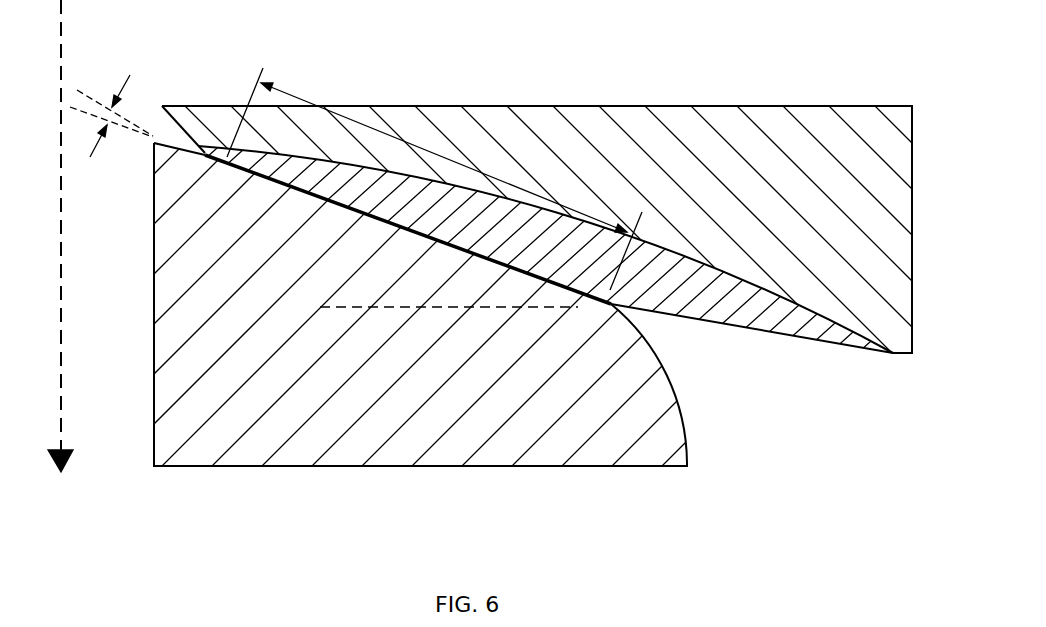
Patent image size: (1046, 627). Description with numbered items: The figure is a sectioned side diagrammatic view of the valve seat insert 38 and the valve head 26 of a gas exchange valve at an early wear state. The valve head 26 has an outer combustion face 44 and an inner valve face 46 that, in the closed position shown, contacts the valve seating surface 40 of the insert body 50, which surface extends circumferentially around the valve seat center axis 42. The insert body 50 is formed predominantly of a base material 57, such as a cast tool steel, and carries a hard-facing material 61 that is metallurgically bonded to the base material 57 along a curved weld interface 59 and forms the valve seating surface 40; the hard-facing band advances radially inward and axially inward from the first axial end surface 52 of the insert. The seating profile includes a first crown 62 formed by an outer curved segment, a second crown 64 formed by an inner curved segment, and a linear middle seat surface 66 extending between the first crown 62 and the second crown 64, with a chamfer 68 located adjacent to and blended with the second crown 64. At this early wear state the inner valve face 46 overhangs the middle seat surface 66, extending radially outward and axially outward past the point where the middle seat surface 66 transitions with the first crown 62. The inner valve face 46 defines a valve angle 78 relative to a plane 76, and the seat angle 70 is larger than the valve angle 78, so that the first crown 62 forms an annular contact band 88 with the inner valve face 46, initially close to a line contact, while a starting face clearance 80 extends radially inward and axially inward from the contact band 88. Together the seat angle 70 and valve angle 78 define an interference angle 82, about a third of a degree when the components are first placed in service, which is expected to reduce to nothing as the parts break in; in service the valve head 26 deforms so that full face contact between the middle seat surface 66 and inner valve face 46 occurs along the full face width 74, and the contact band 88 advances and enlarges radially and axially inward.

The valve head 26 is at (521, 463).
The valve seat insert 38 is at (604, 202).
The insert body 50 is at (790, 105).
The valve seating surface 40 is at (264, 187).
The valve seat center axis 42 is at (68, 224).
The combustion face 44 is at (353, 467).
The inner valve face 46 is at (297, 186).
The first axial end surface 52 is at (895, 357).
The base material 57 is at (874, 211).
The weld interface 59 is at (720, 268).
The hard-facing material 61 is at (740, 324).
The first crown 62 is at (603, 309).
The second crown 64 is at (205, 155).
The middle seat surface 66 is at (408, 208).
The chamfer 68 is at (160, 112).
The seat angle 70 is at (372, 226).
The full face width 74 is at (448, 180).
The plane 76 is at (446, 310).
The valve angle 78 is at (513, 275).
The starting face clearance 80 is at (226, 155).
The interference angle 82 is at (111, 112).
The contact band 88 is at (623, 298).